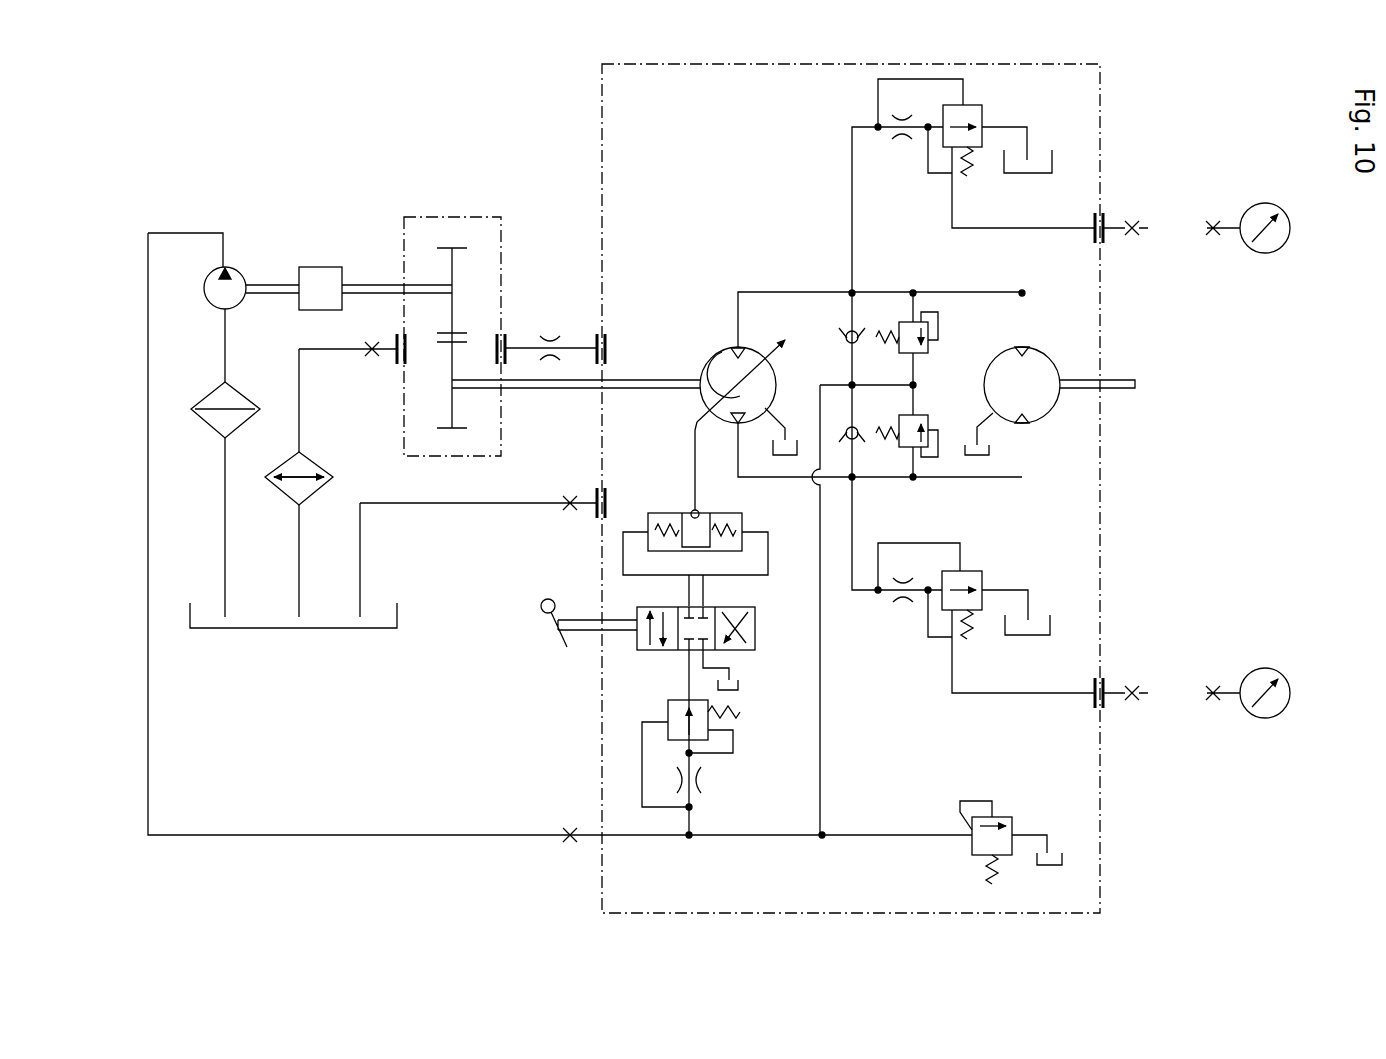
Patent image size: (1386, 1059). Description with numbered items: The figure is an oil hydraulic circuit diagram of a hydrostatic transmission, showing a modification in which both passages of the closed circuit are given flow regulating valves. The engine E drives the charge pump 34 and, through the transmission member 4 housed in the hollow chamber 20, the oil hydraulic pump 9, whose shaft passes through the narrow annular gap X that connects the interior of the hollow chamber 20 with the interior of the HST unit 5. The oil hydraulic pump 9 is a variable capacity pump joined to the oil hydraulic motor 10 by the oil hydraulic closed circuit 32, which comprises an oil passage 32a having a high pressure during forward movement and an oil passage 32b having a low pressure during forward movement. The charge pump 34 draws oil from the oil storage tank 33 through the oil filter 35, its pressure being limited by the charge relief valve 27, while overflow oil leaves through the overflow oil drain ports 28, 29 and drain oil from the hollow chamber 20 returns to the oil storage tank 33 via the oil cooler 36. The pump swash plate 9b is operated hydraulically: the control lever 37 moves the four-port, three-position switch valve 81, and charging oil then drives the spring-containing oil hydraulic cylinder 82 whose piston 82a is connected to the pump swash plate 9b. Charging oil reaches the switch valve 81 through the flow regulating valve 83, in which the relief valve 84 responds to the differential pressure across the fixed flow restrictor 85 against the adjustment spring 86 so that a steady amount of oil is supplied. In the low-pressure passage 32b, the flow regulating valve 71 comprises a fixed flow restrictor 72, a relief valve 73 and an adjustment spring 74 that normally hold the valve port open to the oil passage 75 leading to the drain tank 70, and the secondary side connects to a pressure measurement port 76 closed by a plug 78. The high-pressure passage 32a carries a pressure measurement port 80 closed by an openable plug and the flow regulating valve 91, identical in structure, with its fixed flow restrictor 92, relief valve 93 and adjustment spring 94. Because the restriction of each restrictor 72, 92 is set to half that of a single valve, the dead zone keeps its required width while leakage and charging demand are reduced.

The transmission member 4 is at (470, 315).
The HST unit 5 is at (1108, 495).
The oil hydraulic pump 9 is at (718, 350).
The pump swash plate 9b is at (715, 360).
The oil hydraulic motor 10 is at (1066, 360).
The hollow chamber 20 is at (455, 215).
The charge relief valve 27 is at (1020, 800).
The overflow oil drain port 28 is at (397, 360).
The overflow oil drain port 29 is at (592, 507).
The oil hydraulic closed circuit 32 is at (830, 283).
The oil passage having a high pressure during forward movement 32a is at (960, 293).
The oil passage having a low pressure during forward movement 32b is at (888, 482).
The oil storage tank 33 is at (385, 615).
The charge pump 34 is at (245, 272).
The oil filter 35 is at (195, 395).
The oil cooler 36 is at (332, 477).
The control lever 37 is at (540, 615).
The drain tank 70 is at (1048, 615).
The flow regulating valve 71 is at (912, 652).
The fixed flow restrictor 72 is at (903, 598).
The relief valve 73 is at (978, 572).
The adjustment spring 74 is at (973, 628).
The oil passage 75 is at (1030, 592).
The pressure measurement port 76 is at (1093, 700).
The plug 78 is at (1140, 705).
The pressure measurement port 80 is at (1110, 218).
The switch valve 81 is at (1145, 226).
The oil hydraulic cylinder 82 is at (668, 512).
The piston 82a is at (704, 514).
The flow regulating valve 83 is at (745, 742).
The relief valve 84 is at (668, 712).
The fixed flow restrictor 85 is at (700, 782).
The adjustment spring 86 is at (742, 712).
The flow regulating valve 91 is at (1002, 93).
The fixed flow restrictor 92 is at (905, 140).
The relief valve 93 is at (965, 95).
The adjustment spring 94 is at (975, 168).
The engine E is at (318, 267).
The annular gap X is at (548, 340).